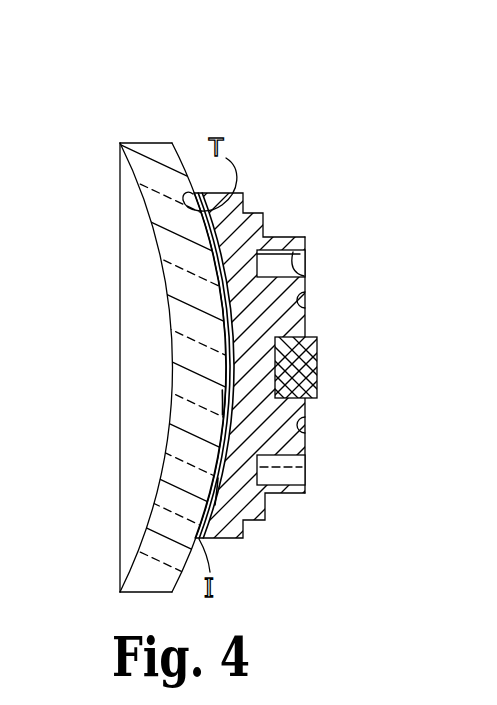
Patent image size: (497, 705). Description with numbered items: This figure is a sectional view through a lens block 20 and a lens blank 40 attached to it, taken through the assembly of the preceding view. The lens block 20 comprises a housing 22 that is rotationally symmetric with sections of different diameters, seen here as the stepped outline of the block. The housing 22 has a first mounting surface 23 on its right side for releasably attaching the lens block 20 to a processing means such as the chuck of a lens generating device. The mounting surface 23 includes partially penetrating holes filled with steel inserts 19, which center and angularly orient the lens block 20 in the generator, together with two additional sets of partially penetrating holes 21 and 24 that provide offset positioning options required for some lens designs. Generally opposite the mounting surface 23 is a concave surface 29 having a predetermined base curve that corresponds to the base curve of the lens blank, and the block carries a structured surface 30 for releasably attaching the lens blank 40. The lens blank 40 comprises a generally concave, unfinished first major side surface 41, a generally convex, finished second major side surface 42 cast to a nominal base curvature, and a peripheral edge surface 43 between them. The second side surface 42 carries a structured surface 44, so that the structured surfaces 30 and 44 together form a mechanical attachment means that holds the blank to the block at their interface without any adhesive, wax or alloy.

The steel inserts 19 is at (317, 368).
The lens block 20 is at (248, 355).
The partially penetrating holes 21 is at (305, 262).
The housing 22 is at (252, 549).
The first mounting surface 23 is at (297, 491).
The partially penetrating holes 24 is at (303, 427).
The concave surface 29 is at (213, 491).
The structured surface 30 is at (212, 402).
The lens blank 40 is at (142, 319).
The first major side surface 41 is at (166, 243).
The second major side surface 42 is at (181, 147).
The peripheral edge surface 43 is at (148, 143).
The structured surface 44 is at (228, 221).